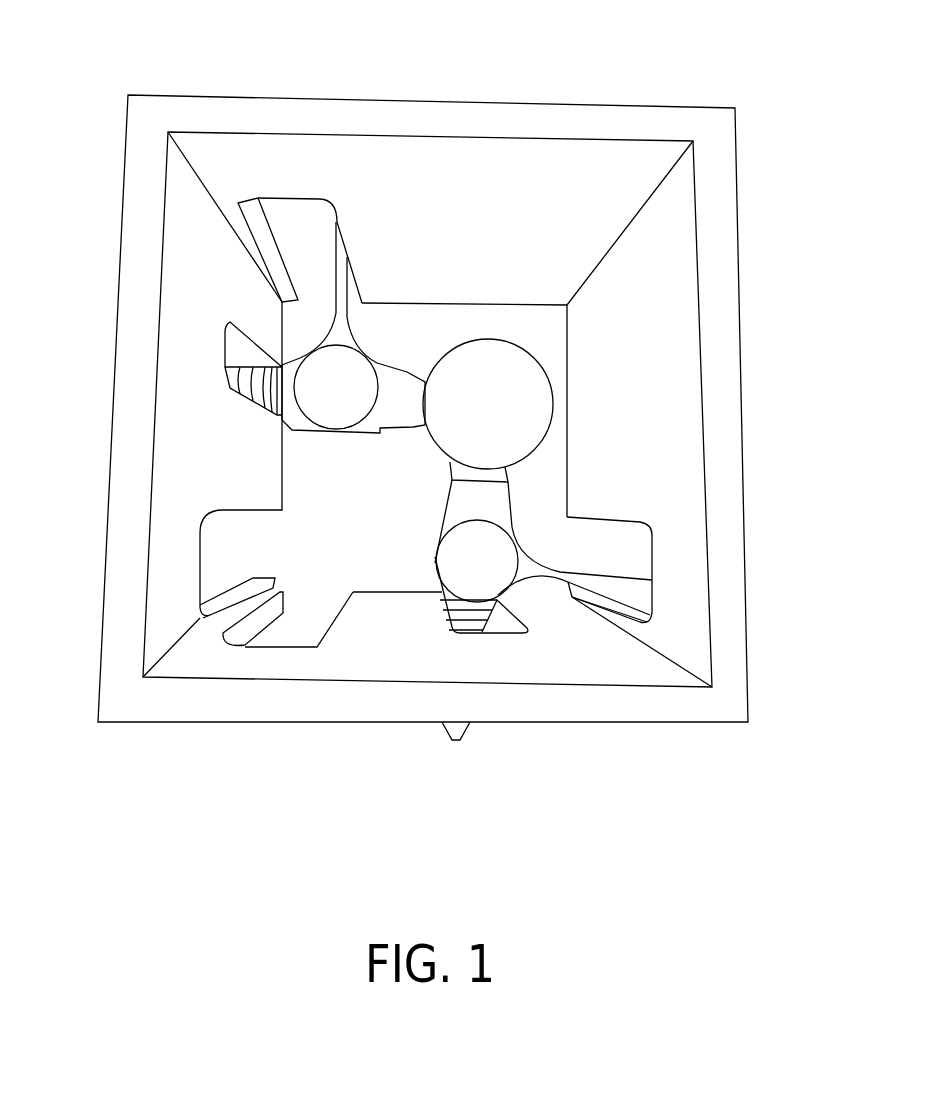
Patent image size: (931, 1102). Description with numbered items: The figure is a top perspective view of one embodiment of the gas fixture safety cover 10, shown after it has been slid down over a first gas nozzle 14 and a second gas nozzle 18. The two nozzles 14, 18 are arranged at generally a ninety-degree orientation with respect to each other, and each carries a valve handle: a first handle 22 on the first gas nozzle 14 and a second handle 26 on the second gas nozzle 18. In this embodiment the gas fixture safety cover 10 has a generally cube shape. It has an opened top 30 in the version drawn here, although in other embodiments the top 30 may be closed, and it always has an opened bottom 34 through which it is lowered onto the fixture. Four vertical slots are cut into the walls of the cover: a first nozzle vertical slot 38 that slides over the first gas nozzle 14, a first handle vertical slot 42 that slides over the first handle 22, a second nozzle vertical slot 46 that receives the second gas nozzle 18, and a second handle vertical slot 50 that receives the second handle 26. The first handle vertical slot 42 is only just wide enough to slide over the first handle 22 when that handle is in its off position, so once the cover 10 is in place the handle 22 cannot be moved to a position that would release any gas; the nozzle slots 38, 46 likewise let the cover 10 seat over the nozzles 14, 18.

The gas fixture safety cover 10 is at (190, 113).
The first gas nozzle 14 is at (233, 375).
The second gas nozzle 18 is at (450, 740).
The first handle 22 is at (342, 268).
The second handle 26 is at (593, 580).
The top 30 is at (245, 700).
The opened bottom 34 is at (565, 343).
The first nozzle vertical slot 38 is at (227, 330).
The first handle vertical slot 42 is at (250, 198).
The second nozzle vertical slot 46 is at (490, 636).
The second handle vertical slot 50 is at (653, 567).